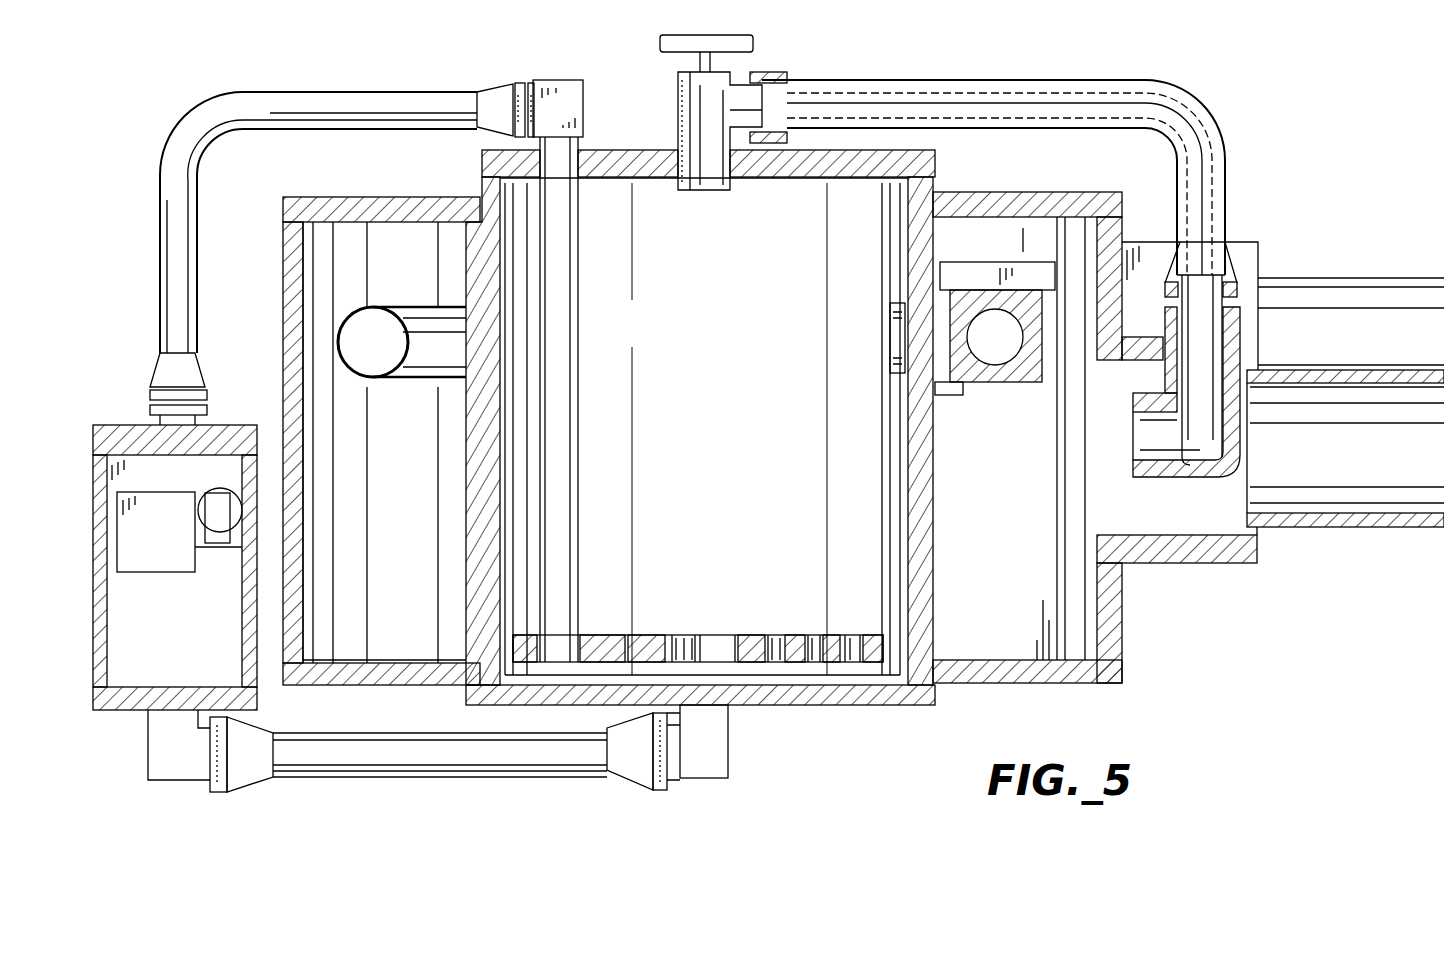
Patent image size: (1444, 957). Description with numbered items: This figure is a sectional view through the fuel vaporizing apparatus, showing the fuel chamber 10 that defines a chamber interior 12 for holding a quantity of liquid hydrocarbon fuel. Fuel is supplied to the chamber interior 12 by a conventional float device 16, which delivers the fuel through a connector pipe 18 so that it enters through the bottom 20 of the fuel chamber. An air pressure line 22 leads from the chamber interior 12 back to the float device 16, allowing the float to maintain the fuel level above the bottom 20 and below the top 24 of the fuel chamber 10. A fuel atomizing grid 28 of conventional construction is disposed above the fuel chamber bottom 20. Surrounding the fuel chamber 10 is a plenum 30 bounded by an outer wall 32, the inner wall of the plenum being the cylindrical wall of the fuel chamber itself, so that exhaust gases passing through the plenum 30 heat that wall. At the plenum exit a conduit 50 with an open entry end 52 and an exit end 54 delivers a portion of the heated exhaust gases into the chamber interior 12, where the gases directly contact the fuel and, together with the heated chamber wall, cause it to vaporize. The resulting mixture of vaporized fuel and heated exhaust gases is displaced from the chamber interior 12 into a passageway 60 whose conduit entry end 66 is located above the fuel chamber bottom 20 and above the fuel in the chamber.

The fuel chamber 10 is at (937, 503).
The chamber interior 12 is at (752, 459).
The float device 16 is at (142, 712).
The connector pipe 18 is at (415, 778).
The bottom 20 is at (798, 705).
The air pressure line 22 is at (580, 343).
The top 24 is at (818, 178).
The fuel atomizing grid 28 is at (603, 635).
The plenum 30 is at (420, 650).
The outer wall 32 is at (283, 320).
The conduit 50 is at (1205, 480).
The open entry end 52 is at (1178, 475).
The exit end 54 is at (698, 190).
The passageway 60 is at (999, 325).
The conduit entry end 66 is at (890, 343).